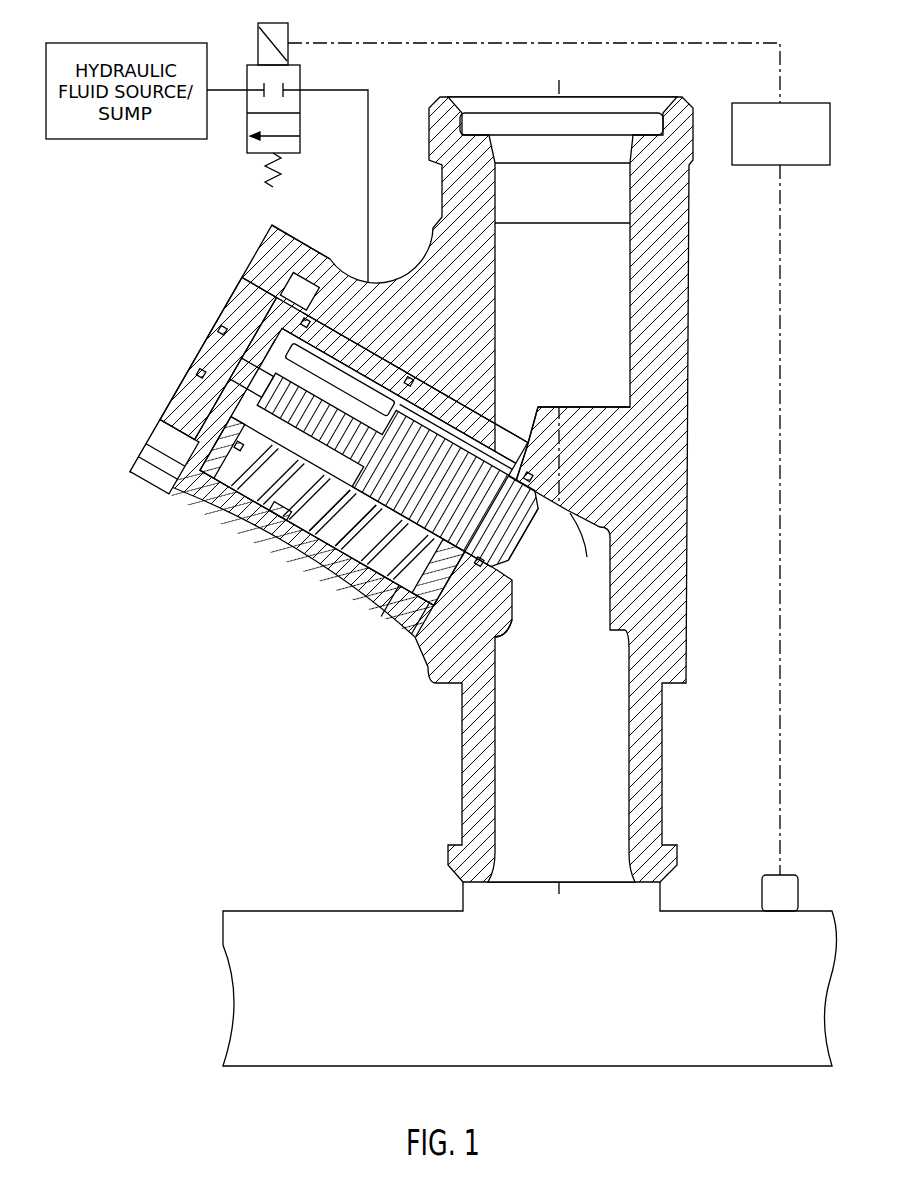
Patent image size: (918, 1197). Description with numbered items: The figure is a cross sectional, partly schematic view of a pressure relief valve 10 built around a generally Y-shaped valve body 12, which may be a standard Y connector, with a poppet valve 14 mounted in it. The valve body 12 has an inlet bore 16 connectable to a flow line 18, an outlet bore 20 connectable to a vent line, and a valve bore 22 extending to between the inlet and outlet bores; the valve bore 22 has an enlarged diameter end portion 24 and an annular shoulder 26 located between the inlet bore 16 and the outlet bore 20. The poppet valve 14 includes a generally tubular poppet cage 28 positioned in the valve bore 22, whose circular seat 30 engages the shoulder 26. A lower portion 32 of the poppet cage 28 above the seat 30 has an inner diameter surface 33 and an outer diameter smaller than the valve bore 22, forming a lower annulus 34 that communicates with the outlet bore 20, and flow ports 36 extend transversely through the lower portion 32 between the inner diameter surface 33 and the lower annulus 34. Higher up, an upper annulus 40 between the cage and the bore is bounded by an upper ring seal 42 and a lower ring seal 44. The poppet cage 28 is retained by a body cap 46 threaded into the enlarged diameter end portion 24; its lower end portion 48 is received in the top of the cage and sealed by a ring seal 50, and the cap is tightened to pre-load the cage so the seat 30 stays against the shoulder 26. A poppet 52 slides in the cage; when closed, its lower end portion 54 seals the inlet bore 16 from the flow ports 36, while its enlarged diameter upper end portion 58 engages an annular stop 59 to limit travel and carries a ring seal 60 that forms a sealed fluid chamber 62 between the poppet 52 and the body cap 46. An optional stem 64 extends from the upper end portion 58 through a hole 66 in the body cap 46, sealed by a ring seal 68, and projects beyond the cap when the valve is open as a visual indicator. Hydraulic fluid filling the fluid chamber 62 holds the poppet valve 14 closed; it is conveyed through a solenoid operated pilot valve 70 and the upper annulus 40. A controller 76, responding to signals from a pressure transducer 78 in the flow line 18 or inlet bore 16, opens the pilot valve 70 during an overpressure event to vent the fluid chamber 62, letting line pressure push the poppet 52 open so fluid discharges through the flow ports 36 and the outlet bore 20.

The pressure relief valve 10 is at (262, 768).
The valve body 12 is at (455, 705).
The poppet valve 14 is at (232, 272).
The inlet bore 16 is at (538, 843).
The flow line 18 is at (584, 996).
The outlet bore 20 is at (599, 203).
The valve bore 22 is at (570, 513).
The enlarged diameter end portion 24 is at (163, 423).
The annular shoulder 26 is at (528, 450).
The poppet cage 28 is at (283, 487).
The circular seat 30 is at (547, 458).
The lower portion 32 is at (425, 560).
The inner diameter surface 33 is at (520, 512).
The lower annulus 34 is at (390, 612).
The flow ports 36 is at (418, 620).
The upper annulus 40 is at (345, 333).
The upper ring seal 42 is at (318, 325).
The lower ring seal 44 is at (425, 385).
The body cap 46 is at (178, 490).
The lower end portion 48 is at (248, 462).
The ring seal 50 is at (248, 440).
The poppet 52 is at (445, 440).
The lower end portion 54 is at (505, 628).
The enlarged diameter upper end portion 58 is at (310, 473).
The annular stop 59 is at (380, 530).
The ring seal 60 is at (325, 480).
The fluid chamber 62 is at (314, 456).
The stem 64 is at (200, 347).
The hole 66 is at (222, 332).
The ring seal 68 is at (202, 377).
The pilot valve 70 is at (233, 145).
The controller 76 is at (791, 147).
The pressure transducer 78 is at (785, 882).